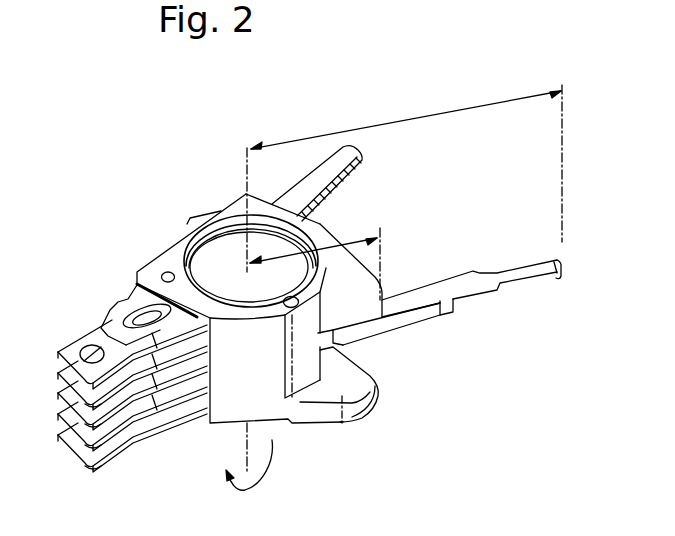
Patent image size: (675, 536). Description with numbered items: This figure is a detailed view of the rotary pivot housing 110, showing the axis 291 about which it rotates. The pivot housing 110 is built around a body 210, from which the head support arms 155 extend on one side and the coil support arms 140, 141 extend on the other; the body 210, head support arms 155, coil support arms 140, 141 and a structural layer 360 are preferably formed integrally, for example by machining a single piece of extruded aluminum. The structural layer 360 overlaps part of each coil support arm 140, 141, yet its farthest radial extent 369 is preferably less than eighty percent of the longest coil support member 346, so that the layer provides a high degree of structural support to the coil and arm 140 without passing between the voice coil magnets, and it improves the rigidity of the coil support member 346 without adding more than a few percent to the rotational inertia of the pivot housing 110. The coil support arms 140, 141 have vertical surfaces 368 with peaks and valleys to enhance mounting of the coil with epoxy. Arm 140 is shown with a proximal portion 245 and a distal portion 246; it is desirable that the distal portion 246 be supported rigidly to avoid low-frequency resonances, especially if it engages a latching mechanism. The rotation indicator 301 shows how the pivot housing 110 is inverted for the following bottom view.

The pivot housing 110 is at (73, 196).
The axis 291 is at (245, 178).
The coil support member 346 is at (307, 139).
The farthest radial extent 369 is at (347, 243).
The coil support arm 141 is at (357, 149).
The vertical surface 368 is at (351, 174).
The structural layer 360 is at (370, 311).
The body 210 is at (265, 380).
The proximal portion 245 is at (407, 322).
The coil support arm 140 is at (478, 298).
The distal portion 246 is at (563, 262).
The head support arms 155 is at (107, 340).
The rotation indicator 301 is at (229, 459).